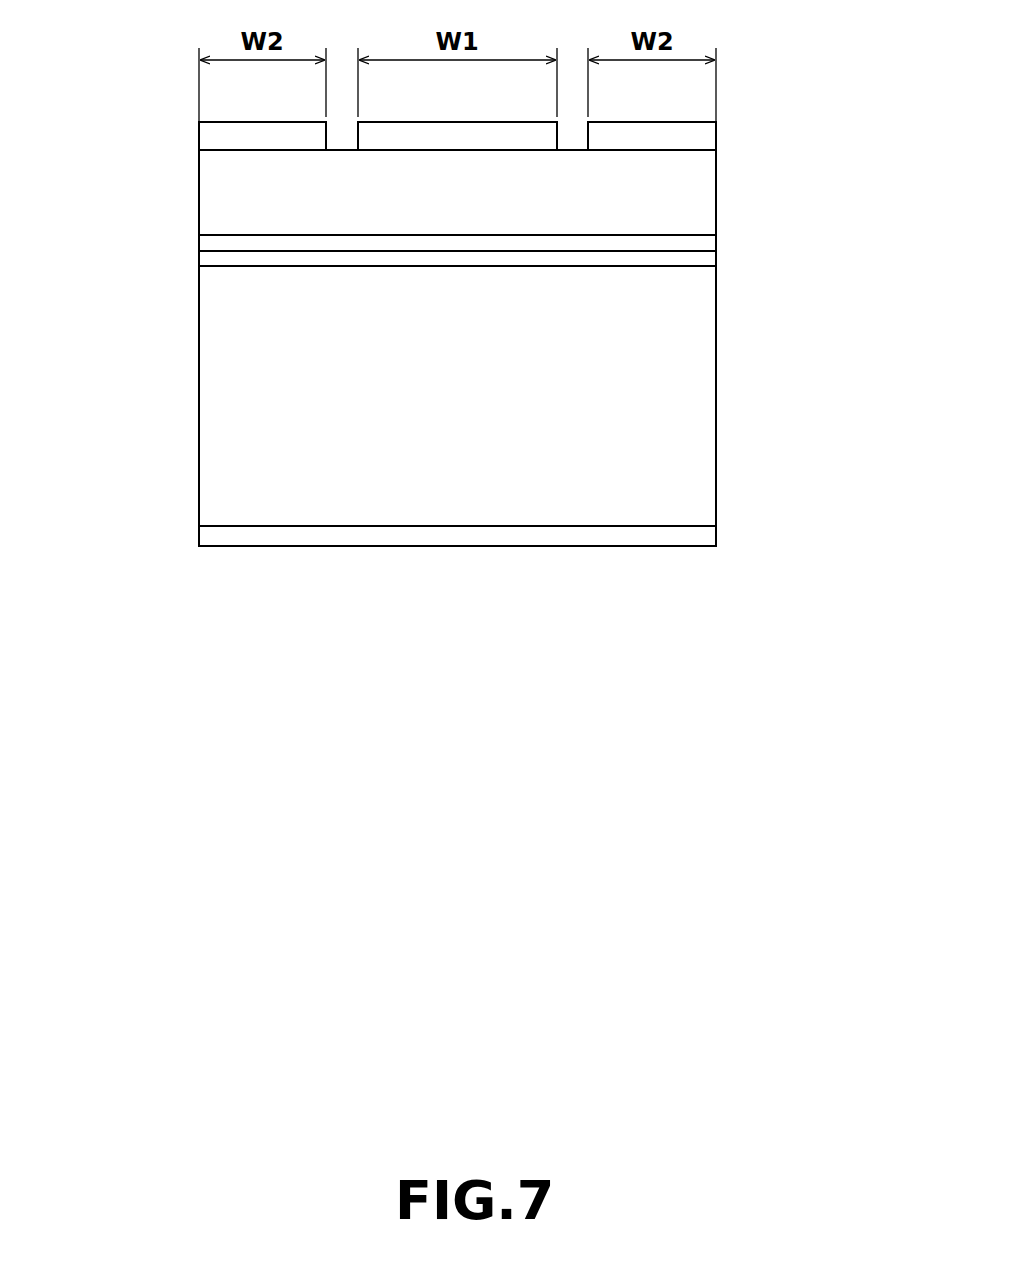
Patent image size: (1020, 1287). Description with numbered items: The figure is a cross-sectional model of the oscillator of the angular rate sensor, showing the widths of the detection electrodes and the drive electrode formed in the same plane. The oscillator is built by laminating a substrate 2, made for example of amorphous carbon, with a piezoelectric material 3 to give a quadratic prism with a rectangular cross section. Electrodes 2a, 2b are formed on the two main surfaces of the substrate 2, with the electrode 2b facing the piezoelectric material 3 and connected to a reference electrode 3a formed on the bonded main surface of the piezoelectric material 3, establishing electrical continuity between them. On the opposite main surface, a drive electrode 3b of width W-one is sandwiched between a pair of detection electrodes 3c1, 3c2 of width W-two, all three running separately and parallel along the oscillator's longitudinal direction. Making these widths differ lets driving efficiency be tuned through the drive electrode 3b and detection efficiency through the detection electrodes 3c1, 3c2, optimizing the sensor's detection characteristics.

The substrate 2 is at (702, 408).
The electrode 2a is at (702, 536).
The electrode 2b is at (660, 267).
The piezoelectric material 3 is at (696, 219).
The reference electrode 3a is at (700, 244).
The drive electrode 3b is at (518, 135).
The detection electrode 3c1 is at (242, 135).
The detection electrode 3c2 is at (673, 137).